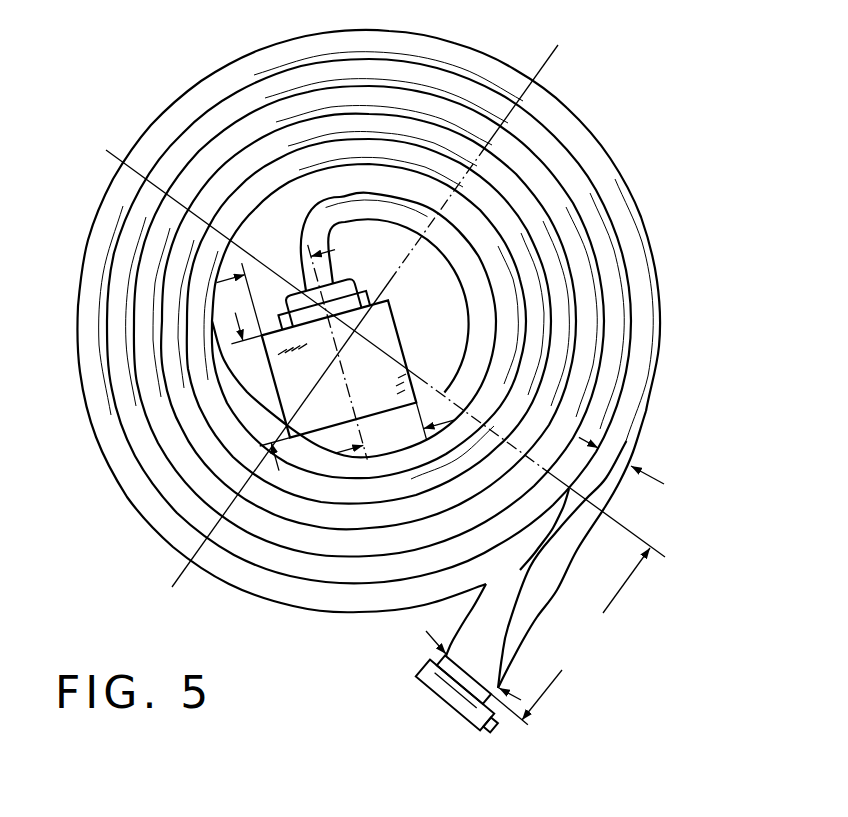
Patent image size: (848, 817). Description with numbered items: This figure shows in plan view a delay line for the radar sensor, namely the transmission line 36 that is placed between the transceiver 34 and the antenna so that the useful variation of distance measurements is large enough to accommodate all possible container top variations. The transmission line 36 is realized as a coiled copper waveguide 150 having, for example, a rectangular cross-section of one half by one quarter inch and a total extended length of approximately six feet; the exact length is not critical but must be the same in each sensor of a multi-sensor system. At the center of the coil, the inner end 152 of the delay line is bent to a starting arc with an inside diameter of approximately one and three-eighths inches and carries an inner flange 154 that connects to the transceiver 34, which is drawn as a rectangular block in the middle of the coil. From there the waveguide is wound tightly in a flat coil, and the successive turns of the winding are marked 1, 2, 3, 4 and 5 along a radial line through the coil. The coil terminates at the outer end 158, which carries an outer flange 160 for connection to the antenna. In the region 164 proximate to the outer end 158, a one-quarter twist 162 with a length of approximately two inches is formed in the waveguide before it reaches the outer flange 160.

The transmission line 36 is at (411, 321).
The coiled copper waveguide 150 is at (650, 322).
The transceiver 34 is at (403, 350).
The inner end 152 is at (335, 253).
The inner flange 154 is at (381, 292).
The outer end 158 is at (445, 652).
The outer flange 160 is at (488, 738).
The one-quarter twist 162 is at (523, 633).
The region proximate to the outer end 164 is at (646, 560).
The coil turn 1 is at (369, 321).
The coil turn 2 is at (369, 321).
The coil turn 3 is at (368, 322).
The coil turn 4 is at (369, 321).
The coil turn 5 is at (369, 321).